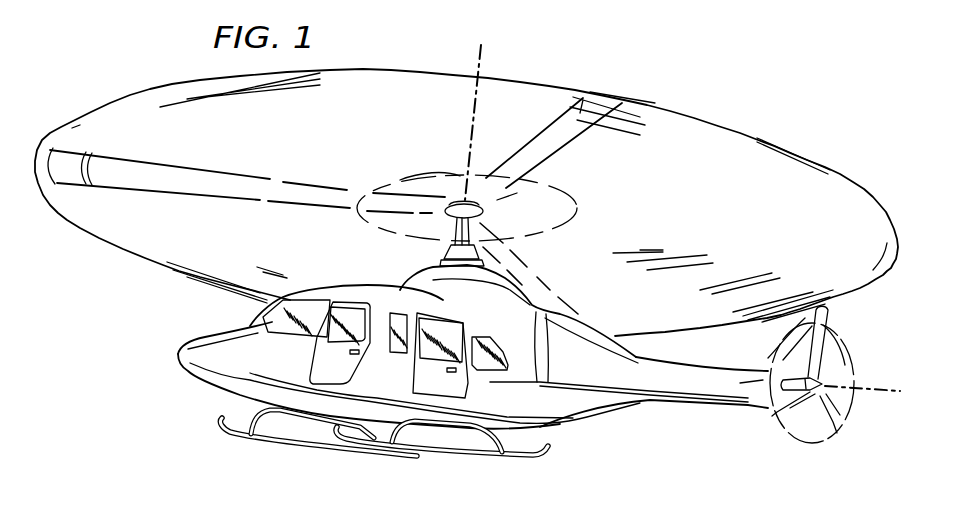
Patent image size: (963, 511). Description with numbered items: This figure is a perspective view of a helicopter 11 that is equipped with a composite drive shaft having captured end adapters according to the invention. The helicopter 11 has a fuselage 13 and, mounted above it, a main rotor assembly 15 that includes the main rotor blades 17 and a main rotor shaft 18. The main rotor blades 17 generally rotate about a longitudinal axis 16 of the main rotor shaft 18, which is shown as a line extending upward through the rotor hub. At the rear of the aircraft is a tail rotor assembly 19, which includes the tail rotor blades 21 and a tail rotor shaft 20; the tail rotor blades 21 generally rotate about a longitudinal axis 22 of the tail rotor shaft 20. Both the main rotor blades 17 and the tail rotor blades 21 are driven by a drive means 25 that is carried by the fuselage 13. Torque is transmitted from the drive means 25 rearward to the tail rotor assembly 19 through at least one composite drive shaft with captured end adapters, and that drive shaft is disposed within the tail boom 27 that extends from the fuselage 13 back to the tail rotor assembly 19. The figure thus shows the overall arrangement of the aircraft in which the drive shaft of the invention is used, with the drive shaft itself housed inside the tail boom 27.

The helicopter 11 is at (648, 72).
The fuselage 13 is at (213, 380).
The main rotor assembly 15 is at (521, 250).
The longitudinal axis 16 is at (472, 117).
The main rotor blades 17 is at (190, 165).
The main rotor shaft 18 is at (487, 217).
The tail rotor assembly 19 is at (830, 447).
The tail rotor shaft 20 is at (793, 432).
The tail rotor blades 21 is at (840, 358).
The longitudinal axis 22 is at (882, 397).
The drive means 25 is at (450, 245).
The tail boom 27 is at (653, 407).